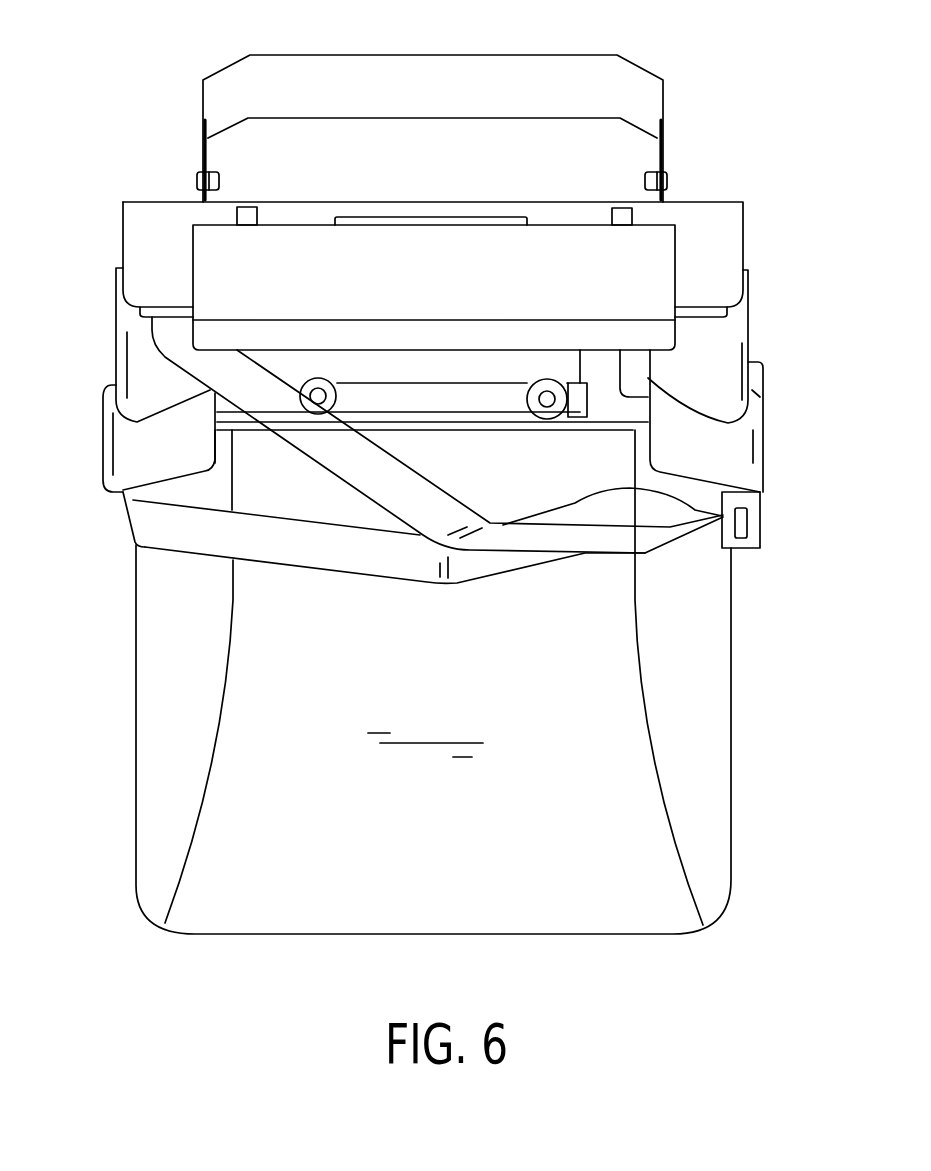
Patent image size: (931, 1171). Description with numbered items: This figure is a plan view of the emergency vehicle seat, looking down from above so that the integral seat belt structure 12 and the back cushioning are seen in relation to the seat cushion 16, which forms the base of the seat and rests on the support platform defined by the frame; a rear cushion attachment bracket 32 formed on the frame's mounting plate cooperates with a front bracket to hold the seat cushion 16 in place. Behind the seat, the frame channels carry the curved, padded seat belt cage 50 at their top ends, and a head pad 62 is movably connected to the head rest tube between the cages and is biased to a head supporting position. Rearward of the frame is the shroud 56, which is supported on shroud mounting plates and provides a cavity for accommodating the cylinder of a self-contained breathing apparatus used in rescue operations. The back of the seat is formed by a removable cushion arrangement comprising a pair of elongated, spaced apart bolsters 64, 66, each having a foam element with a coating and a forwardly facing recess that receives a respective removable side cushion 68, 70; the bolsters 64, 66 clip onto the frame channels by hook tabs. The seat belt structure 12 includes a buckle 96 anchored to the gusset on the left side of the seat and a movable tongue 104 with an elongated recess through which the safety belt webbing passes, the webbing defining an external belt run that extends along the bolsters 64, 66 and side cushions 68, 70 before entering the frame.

The integral seat belt structure 12 is at (348, 577).
The seat cushion 16 is at (731, 823).
The rear cushion attachment bracket 32 is at (433, 383).
The seat belt cage 50 is at (745, 228).
The shroud 56 is at (540, 55).
The head pad 62 is at (585, 225).
The bolster 64 is at (115, 335).
The bolster 66 is at (748, 333).
The side cushion 68 is at (102, 440).
The side cushion 70 is at (765, 455).
The buckle 96 is at (762, 530).
The movable tongue 104 is at (706, 528).